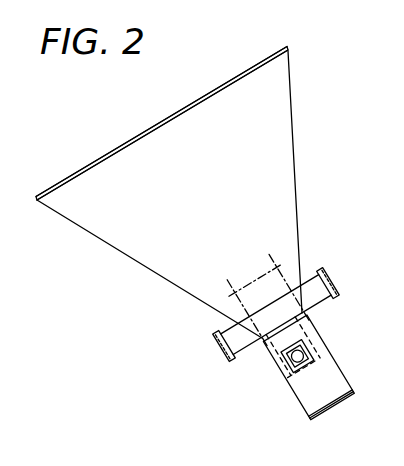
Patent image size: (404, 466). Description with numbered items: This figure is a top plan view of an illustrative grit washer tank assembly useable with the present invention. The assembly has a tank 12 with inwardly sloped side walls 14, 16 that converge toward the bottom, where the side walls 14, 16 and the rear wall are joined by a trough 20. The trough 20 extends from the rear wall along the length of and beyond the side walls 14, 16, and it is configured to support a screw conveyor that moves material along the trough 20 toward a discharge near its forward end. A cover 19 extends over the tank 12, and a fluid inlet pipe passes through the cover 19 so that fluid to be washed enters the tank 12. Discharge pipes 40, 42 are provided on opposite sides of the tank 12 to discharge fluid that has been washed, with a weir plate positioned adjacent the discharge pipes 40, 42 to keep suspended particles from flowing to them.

The tank 12 is at (254, 36).
The side wall 14 is at (295, 173).
The side wall 16 is at (107, 243).
The cover 19 is at (97, 162).
The trough 20 is at (320, 342).
The discharge pipe 40 is at (248, 352).
The discharge pipe 42 is at (311, 270).